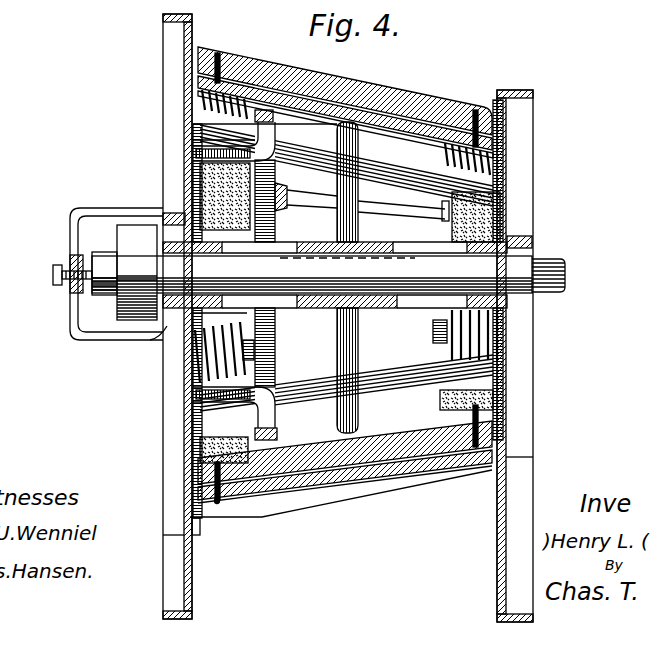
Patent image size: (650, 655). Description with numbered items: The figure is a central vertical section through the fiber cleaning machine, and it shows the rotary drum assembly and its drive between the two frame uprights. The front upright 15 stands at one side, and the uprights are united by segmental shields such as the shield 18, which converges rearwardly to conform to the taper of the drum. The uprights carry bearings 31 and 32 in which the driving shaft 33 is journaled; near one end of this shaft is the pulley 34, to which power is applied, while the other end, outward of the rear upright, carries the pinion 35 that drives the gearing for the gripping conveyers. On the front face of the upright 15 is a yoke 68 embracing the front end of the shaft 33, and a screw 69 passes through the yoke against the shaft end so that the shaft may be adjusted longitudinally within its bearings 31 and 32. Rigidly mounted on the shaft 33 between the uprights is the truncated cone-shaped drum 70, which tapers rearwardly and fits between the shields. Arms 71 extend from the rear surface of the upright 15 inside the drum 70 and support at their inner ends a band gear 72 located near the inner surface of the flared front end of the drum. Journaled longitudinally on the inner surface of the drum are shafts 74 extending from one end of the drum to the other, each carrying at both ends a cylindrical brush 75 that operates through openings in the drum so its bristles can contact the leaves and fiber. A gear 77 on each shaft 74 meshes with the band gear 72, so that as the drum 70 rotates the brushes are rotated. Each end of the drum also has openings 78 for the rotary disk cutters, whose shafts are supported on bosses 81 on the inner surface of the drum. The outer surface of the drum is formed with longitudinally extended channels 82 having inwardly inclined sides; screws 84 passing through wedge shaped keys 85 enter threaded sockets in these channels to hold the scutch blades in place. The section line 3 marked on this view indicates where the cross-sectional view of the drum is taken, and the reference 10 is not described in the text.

The section line 3— 3 is at (248, 115).
The frame standard (right) 10 is at (533, 420).
The upright 15 is at (163, 419).
The segmental shield 18 is at (338, 496).
The bearing 31 is at (162, 340).
The bearing 32 is at (533, 246).
The driving shaft 33 is at (312, 274).
The pulley 34 is at (128, 230).
The pinion 35 is at (547, 294).
The yoke 68 is at (72, 215).
The screw 69 is at (53, 275).
The truncated cone-shaped drum 70 is at (213, 102).
The arms 71 is at (200, 138).
The band gear 72 is at (278, 227).
The shafts 74 is at (396, 210).
The cylindrical brush 75 is at (245, 212).
The gear 77 is at (287, 195).
The openings 78 is at (200, 342).
The bosses 81 is at (255, 350).
The channels 82 is at (370, 93).
The screws 84 is at (224, 58).
The wedge shaped keys 85 is at (412, 118).